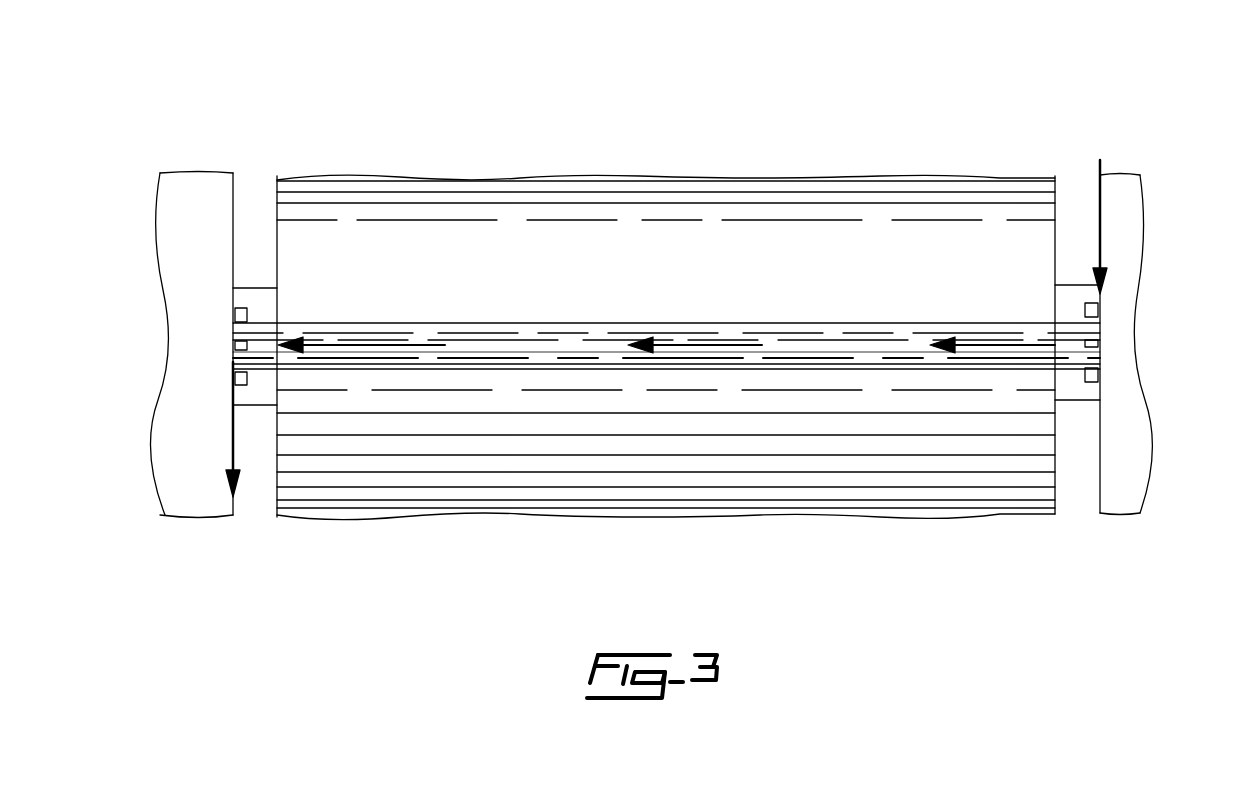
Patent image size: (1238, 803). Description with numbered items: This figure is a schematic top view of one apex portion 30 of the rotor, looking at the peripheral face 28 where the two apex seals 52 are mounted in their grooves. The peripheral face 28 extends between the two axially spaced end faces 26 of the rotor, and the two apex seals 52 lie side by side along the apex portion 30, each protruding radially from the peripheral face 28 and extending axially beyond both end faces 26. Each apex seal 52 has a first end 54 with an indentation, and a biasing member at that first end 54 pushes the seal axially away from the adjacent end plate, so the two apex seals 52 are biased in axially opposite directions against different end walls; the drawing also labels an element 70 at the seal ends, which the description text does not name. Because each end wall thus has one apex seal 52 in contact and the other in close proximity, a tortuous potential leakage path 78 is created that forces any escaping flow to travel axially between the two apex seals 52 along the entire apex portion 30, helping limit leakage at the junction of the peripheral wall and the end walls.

The end face 26 is at (233, 492).
The peripheral face 28 is at (403, 215).
The apex portion 30 is at (940, 158).
The apex seal 52 is at (520, 332).
The first end 54 is at (233, 362).
The flow channel 70 is at (250, 343).
The tortuous potential leakage path 78 is at (343, 343).